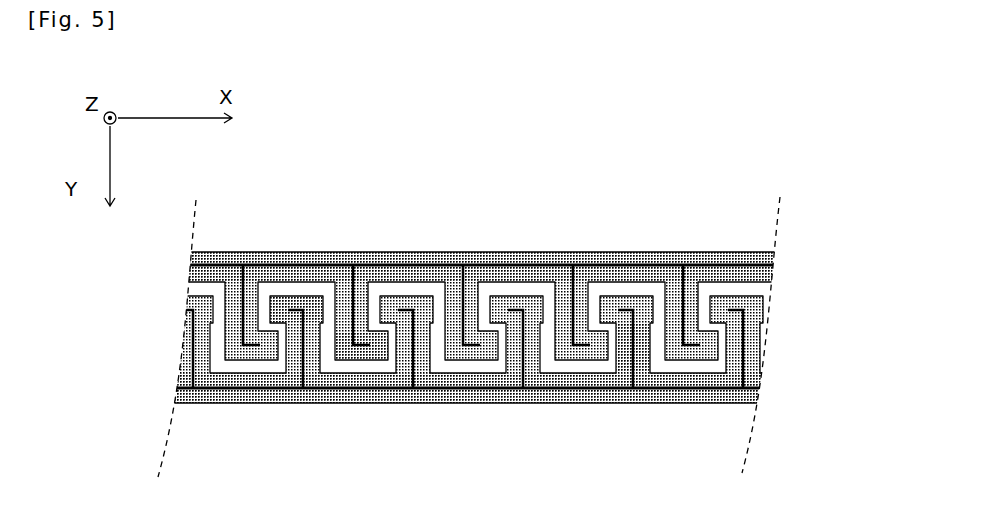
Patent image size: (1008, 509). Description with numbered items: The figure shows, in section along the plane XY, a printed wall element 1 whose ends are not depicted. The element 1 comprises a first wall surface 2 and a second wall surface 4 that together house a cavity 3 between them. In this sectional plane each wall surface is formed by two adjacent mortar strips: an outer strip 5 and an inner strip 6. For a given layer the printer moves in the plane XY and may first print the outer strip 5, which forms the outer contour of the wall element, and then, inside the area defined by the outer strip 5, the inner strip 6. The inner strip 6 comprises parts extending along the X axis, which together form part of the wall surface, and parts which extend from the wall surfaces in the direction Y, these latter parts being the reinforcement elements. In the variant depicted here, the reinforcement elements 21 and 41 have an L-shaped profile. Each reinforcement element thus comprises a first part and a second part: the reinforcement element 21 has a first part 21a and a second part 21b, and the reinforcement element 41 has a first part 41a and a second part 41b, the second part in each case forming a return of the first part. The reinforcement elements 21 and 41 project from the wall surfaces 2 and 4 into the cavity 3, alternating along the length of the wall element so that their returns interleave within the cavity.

The piezoelectric vibration device 1 is at (496, 207).
The first wall surface 2 is at (697, 265).
The cavity 3 is at (633, 342).
The second wall surface 4 is at (683, 398).
The outer strip 5 is at (767, 258).
The inner strip 6 is at (765, 273).
The reinforcement element 21 is at (337, 289).
The first part 21a is at (355, 296).
The second part 21b is at (363, 362).
The reinforcement element 41 is at (292, 358).
The first part 41a is at (320, 358).
The second part 41b is at (308, 297).